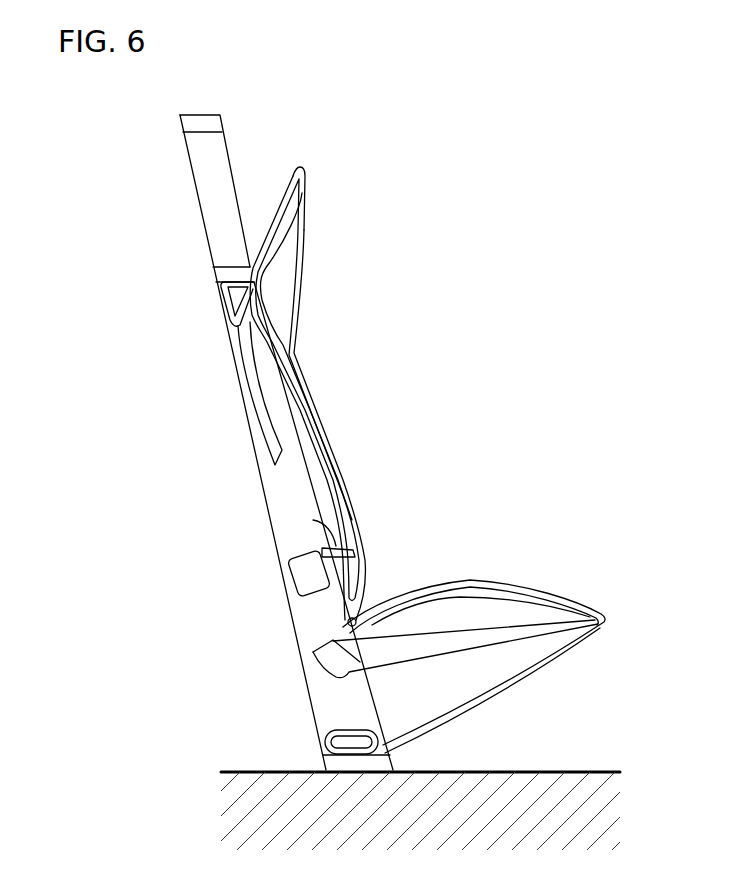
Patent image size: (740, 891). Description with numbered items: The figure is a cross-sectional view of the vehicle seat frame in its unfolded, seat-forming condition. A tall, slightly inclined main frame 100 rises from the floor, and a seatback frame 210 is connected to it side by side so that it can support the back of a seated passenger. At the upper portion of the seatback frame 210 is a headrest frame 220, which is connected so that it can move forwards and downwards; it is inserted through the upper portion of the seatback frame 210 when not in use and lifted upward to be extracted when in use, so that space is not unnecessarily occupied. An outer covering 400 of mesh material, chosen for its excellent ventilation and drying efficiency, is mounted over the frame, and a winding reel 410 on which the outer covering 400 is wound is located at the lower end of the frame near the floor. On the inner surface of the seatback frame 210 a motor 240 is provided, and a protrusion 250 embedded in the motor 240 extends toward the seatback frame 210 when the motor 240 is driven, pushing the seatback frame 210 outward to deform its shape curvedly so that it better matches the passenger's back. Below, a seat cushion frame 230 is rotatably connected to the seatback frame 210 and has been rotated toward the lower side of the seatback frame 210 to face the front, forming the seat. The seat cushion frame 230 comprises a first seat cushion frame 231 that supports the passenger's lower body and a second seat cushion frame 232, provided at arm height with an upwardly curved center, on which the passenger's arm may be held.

The main frame 100 is at (207, 187).
The seatback frame 210 is at (333, 448).
The headrest frame 220 is at (297, 190).
The outer covering 400 is at (307, 215).
The protrusion 250 is at (313, 520).
The motor 240 is at (305, 572).
The seat cushion frame 230 is at (478, 605).
The first seat cushion frame 231 is at (558, 625).
The second seat cushion frame 232 is at (498, 600).
The winding reel 410 is at (325, 740).